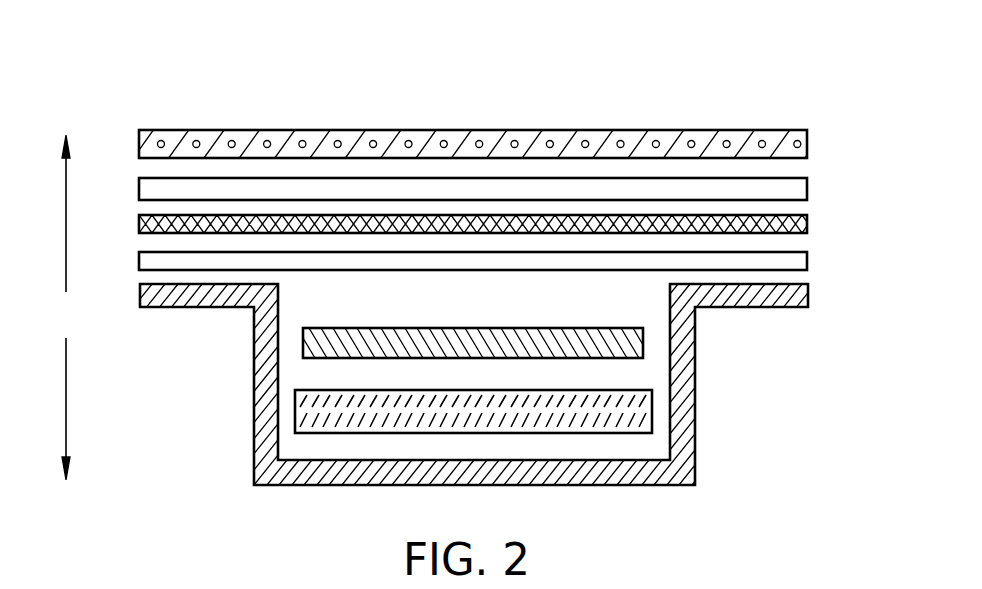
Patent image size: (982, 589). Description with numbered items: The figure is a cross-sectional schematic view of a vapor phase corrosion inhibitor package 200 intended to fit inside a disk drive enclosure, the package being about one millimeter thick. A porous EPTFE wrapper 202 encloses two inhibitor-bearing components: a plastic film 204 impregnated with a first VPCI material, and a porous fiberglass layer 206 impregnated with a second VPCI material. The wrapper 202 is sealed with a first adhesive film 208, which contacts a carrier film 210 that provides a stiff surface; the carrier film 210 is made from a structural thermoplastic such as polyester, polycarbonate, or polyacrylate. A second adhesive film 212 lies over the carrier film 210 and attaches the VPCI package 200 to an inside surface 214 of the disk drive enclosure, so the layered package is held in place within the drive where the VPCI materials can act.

The VPCI package 200 is at (205, 93).
The porous EPTFE wrapper 202 is at (798, 297).
The plastic film 204 is at (628, 415).
The porous fiberglass layer 206 is at (632, 347).
The first adhesive film 208 is at (800, 260).
The carrier film 210 is at (807, 220).
The second adhesive film 212 is at (803, 188).
The inside surface 214 is at (807, 140).